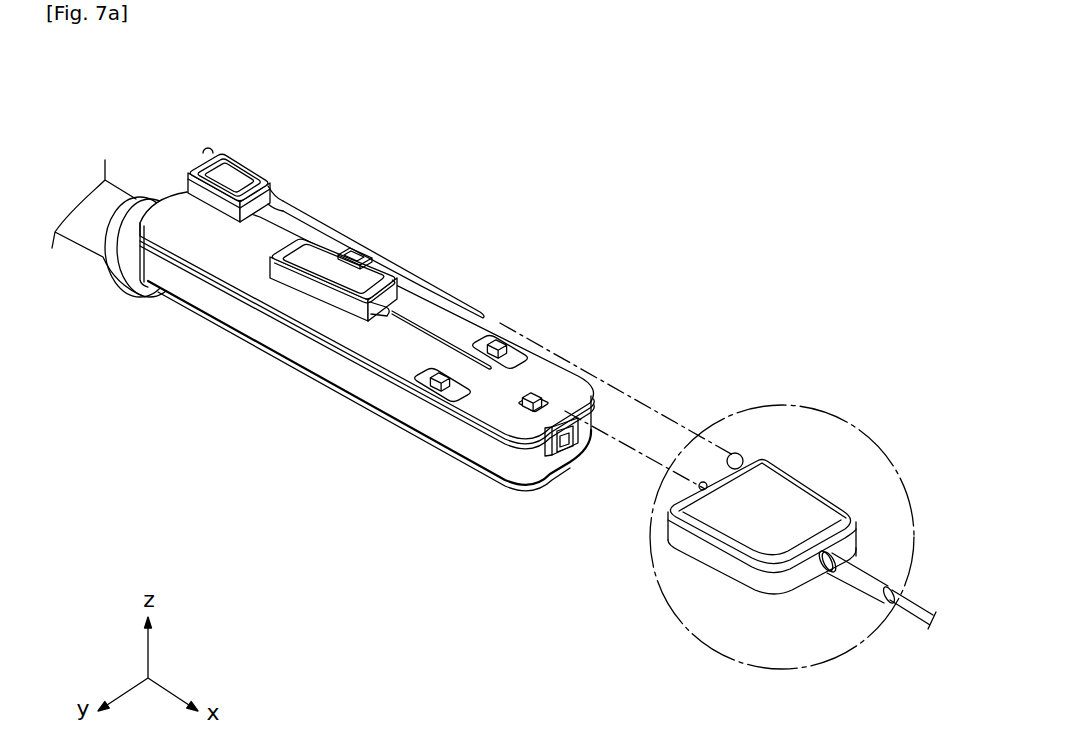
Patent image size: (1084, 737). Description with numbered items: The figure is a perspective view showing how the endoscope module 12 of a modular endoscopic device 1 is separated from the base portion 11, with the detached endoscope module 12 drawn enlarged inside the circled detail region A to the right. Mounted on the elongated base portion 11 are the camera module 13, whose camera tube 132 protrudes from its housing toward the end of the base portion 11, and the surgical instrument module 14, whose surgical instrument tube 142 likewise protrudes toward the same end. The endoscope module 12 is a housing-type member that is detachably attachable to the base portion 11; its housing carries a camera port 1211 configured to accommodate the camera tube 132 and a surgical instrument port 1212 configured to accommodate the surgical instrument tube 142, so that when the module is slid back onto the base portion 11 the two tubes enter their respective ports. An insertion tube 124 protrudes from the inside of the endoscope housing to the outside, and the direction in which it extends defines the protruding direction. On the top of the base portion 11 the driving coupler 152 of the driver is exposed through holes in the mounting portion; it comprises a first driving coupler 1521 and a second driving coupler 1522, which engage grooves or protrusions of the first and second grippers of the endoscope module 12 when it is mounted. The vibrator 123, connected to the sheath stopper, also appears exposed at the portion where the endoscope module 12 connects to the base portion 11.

The modular endoscopic device 1 is at (940, 104).
The base portion 11 is at (190, 323).
The endoscope module 12 is at (791, 528).
The camera port 1211 is at (741, 453).
The surgical instrument port 1212 is at (702, 489).
The insertion tube 124 is at (912, 605).
The camera module 13 is at (260, 153).
The camera tube 132 is at (405, 270).
The surgical instrument module 14 is at (311, 313).
The surgical instrument tube 142 is at (407, 325).
The driving coupler 152 is at (441, 456).
The first driving coupler 1521 is at (431, 389).
The second driving coupler 1522 is at (500, 360).
The vibrator 123 is at (547, 383).
The detail region A is at (851, 421).